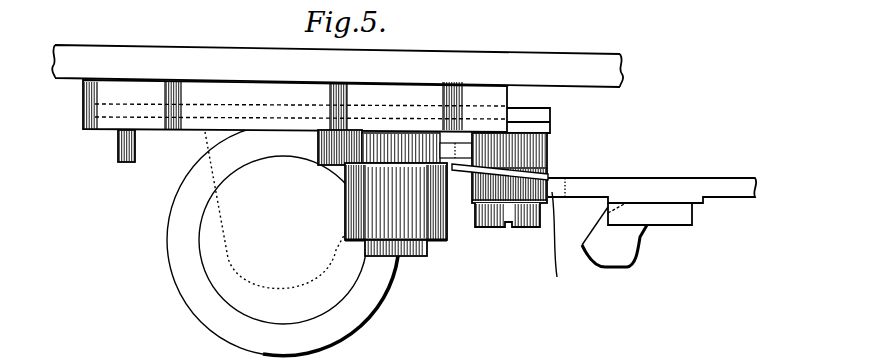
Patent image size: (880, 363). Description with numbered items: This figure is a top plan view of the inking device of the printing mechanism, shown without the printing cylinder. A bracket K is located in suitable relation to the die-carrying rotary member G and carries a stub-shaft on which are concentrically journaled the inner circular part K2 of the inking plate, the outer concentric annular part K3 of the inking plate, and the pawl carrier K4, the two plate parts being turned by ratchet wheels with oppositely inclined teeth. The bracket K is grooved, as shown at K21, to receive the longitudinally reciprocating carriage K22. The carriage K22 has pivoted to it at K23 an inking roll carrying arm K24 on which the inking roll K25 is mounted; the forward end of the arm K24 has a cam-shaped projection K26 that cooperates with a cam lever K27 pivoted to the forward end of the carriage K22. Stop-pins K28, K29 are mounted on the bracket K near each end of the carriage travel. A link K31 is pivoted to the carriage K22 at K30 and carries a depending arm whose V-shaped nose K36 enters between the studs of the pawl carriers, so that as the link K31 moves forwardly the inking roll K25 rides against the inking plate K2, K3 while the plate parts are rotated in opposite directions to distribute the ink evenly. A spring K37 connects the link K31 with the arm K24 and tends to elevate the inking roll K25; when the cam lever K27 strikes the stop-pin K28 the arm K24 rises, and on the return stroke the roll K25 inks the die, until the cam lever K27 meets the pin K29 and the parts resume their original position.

The die-carrying rotary member G is at (547, 63).
The bracket K is at (96, 98).
The inner circular part of the inking plate K2 is at (235, 295).
The outer concentric annular part of the inking plate K3 is at (197, 296).
The pawl carrier K4 is at (338, 309).
The groove K21 is at (250, 10).
The longitudinally-reciprocating carriage K22 is at (550, 110).
The pivot K23 is at (549, 150).
The inking roll carrying arm K24 is at (453, 172).
The inking roll K25 is at (432, 243).
The cam-shaped projection K26 is at (301, 210).
The cam lever K27 is at (318, 142).
The stop-pin K28 is at (127, 163).
The stop-pin K29 is at (347, 167).
The pivot K30 is at (572, 246).
The link K31 is at (702, 183).
The V-shaped nose K36 is at (582, 266).
The spring K37 is at (560, 175).